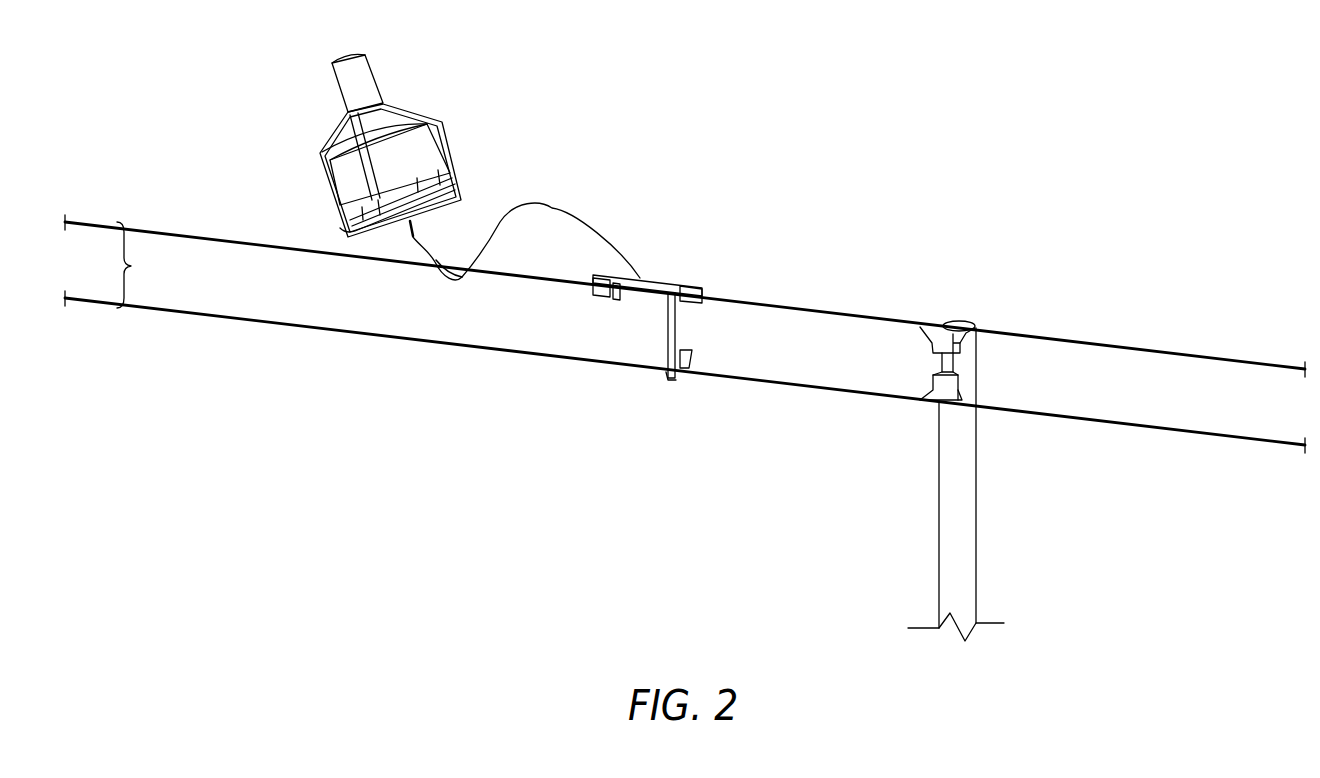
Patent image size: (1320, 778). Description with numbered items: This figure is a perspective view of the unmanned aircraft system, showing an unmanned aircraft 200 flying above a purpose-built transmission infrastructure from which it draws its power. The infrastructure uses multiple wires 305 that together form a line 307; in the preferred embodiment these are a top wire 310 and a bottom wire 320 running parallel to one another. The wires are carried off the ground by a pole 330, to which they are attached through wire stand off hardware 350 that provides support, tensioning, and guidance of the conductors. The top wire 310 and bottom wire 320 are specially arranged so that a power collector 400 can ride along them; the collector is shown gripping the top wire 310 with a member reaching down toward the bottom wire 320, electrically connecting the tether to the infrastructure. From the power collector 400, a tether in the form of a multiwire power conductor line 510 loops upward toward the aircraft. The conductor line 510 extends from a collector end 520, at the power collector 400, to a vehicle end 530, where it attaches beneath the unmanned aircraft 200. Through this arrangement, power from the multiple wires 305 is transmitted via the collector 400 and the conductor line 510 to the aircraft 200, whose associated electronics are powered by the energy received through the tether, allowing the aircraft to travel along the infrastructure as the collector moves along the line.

The unmanned aircraft 200 is at (378, 80).
The wires 305 is at (685, 313).
The line 307 is at (131, 266).
The top wire 310 is at (268, 246).
The bottom wire 320 is at (308, 329).
The pole 330 is at (939, 543).
The wire stand off hardware 350 is at (957, 356).
The power collector 400 is at (688, 299).
The multiwire power conductor line 510 is at (525, 221).
The collector end 520 is at (640, 273).
The vehicle end 530 is at (443, 258).